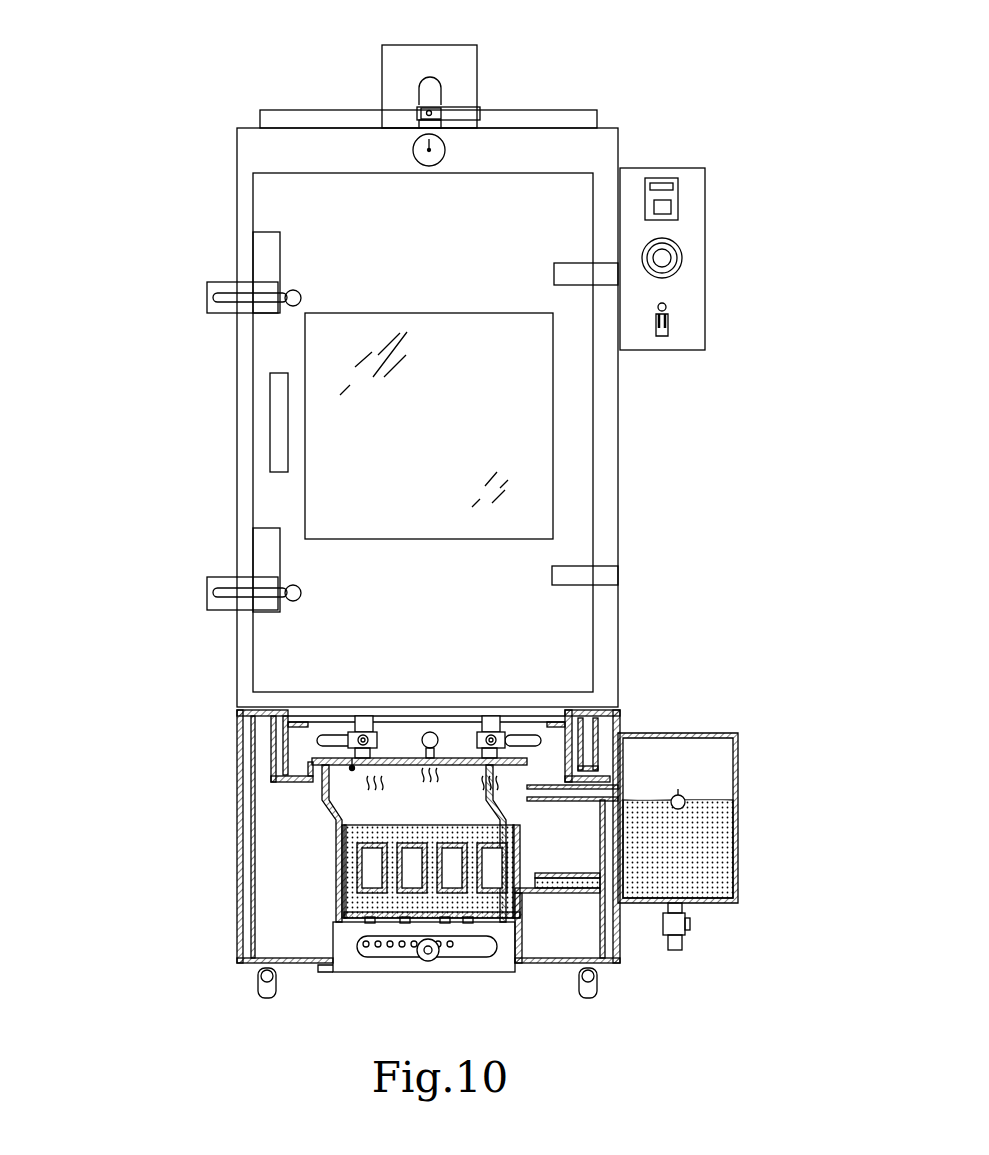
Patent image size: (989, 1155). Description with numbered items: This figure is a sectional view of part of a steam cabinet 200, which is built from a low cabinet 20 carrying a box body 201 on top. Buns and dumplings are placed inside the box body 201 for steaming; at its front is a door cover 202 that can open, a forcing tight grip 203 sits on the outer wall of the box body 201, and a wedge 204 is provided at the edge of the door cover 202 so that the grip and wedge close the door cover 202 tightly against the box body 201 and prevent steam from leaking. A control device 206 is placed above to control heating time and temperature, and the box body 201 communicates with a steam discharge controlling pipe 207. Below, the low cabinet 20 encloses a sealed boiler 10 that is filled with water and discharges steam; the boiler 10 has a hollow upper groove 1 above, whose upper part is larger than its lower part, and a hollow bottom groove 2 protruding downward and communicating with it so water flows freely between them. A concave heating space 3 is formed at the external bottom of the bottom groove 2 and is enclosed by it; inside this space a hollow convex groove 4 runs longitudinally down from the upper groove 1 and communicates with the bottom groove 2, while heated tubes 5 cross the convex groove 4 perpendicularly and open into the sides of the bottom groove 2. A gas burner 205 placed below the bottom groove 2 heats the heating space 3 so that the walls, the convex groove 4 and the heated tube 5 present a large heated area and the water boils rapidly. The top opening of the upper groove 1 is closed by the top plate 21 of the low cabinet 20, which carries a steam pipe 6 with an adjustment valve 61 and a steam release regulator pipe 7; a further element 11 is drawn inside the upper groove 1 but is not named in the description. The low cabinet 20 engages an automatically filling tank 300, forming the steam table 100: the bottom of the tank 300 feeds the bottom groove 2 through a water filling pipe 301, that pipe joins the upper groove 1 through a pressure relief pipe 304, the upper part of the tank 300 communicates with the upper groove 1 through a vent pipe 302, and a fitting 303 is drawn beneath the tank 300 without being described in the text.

The steam cabinet 200 is at (643, 86).
The box body 201 is at (607, 388).
The door cover 202 is at (578, 434).
The forcing tight grip 203 is at (208, 303).
The wedge 204 is at (265, 253).
The gas burner 205 is at (483, 950).
The control device 206 is at (693, 233).
The steam discharge controlling pipe 207 is at (440, 108).
The steam table 100 is at (657, 705).
The automatically filling tank 300 is at (738, 768).
The water filling pipe 301 is at (565, 868).
The vent pipe 302 is at (620, 755).
The drain valve 303 is at (690, 925).
The pressure relief pipe 304 is at (580, 876).
The boiler 10 is at (178, 808).
The low cabinet 20 is at (238, 797).
The upper groove 1 is at (322, 815).
The bottom groove 2 is at (330, 902).
The heating space 3 is at (403, 921).
The convex groove 4 is at (387, 918).
The heated tube 5 is at (370, 923).
The steam pipe 6 is at (355, 737).
The adjustment valve 61 is at (317, 741).
The steam release regulator pipe 7 is at (430, 732).
The steam outlet 11 is at (352, 766).
The top plate 21 is at (500, 742).